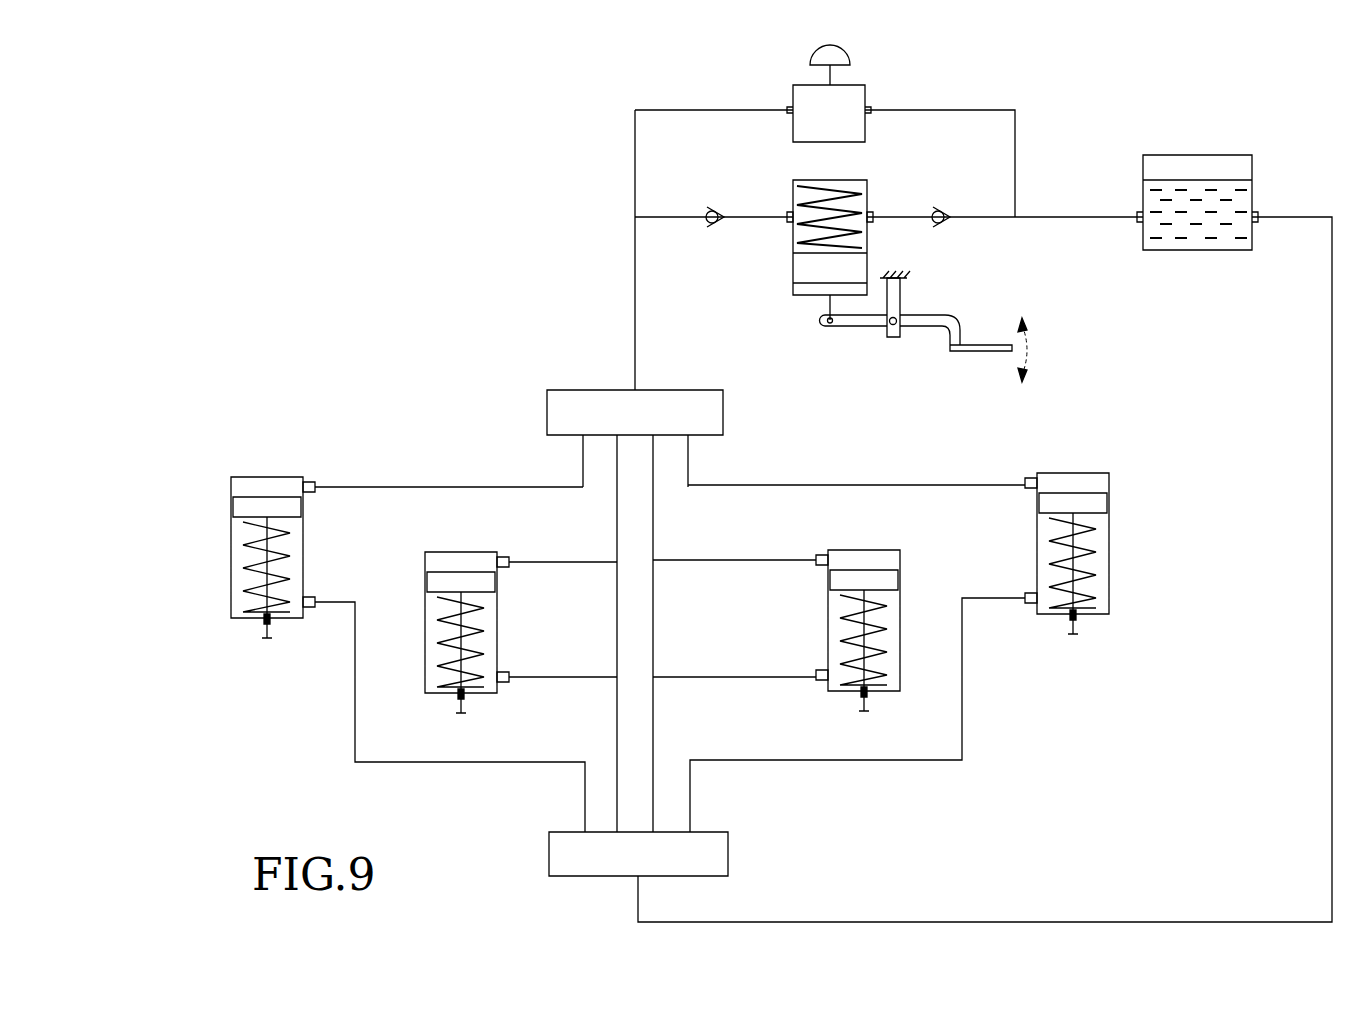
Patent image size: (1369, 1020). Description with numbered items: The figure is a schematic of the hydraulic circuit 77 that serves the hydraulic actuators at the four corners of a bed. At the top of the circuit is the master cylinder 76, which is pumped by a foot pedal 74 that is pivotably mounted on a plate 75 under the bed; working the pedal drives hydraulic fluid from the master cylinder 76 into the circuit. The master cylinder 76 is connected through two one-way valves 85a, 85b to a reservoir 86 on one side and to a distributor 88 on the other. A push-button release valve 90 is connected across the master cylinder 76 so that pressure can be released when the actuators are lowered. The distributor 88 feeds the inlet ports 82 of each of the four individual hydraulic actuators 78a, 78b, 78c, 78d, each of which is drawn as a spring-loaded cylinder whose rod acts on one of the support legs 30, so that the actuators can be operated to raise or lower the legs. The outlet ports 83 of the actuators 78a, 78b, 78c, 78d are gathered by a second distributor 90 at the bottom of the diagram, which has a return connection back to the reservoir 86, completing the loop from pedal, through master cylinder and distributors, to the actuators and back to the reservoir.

The support legs 30 is at (262, 632).
The foot pedal 74 is at (985, 352).
The plate 75 is at (905, 305).
The master cylinder 76 is at (845, 178).
The hydraulic circuit 77 is at (490, 232).
The hydraulic actuator 78a is at (231, 490).
The hydraulic actuator 78b is at (1112, 480).
The hydraulic actuator 78c is at (425, 620).
The hydraulic actuator 78d is at (868, 548).
The inlet ports 82 is at (313, 480).
The outlet ports 83 is at (315, 597).
The one-way valve 85a is at (948, 225).
The one-way valve 85b is at (725, 225).
The reservoir 86 is at (1195, 153).
The distributor 88 is at (545, 412).
The push-button release valve 90 is at (865, 45).